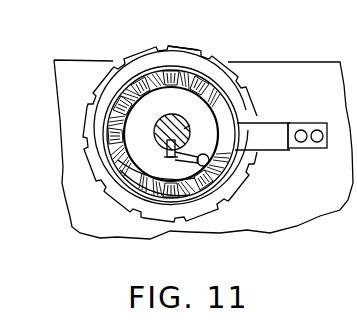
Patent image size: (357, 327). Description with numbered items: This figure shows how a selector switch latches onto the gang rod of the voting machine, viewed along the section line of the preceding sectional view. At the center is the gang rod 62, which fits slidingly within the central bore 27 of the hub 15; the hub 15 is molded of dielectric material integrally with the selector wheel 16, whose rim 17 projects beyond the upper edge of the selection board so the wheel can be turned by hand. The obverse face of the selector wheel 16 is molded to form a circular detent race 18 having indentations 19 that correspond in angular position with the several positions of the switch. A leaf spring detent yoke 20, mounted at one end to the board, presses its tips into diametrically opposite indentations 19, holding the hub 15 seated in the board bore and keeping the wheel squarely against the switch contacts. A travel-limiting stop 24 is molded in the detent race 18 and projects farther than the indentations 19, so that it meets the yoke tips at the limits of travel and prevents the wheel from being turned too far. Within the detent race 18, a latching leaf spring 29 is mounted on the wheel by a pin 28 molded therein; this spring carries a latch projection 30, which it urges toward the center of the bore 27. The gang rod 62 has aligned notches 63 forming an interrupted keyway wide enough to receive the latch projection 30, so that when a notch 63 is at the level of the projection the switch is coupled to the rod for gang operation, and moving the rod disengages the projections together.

The hub 15 is at (147, 115).
The selector wheel 16 is at (188, 58).
The rim 17 is at (163, 47).
The detent race 18 is at (142, 70).
The indentations 19 is at (110, 132).
The leaf spring detent yoke 20 is at (268, 137).
The travel-limiting stop 24 is at (117, 157).
The central bore 27 is at (184, 129).
The pin 28 is at (203, 154).
The latching leaf spring 29 is at (160, 187).
The latch projection 30 is at (146, 163).
The gang rod 62 is at (186, 119).
The notches 63 is at (166, 149).